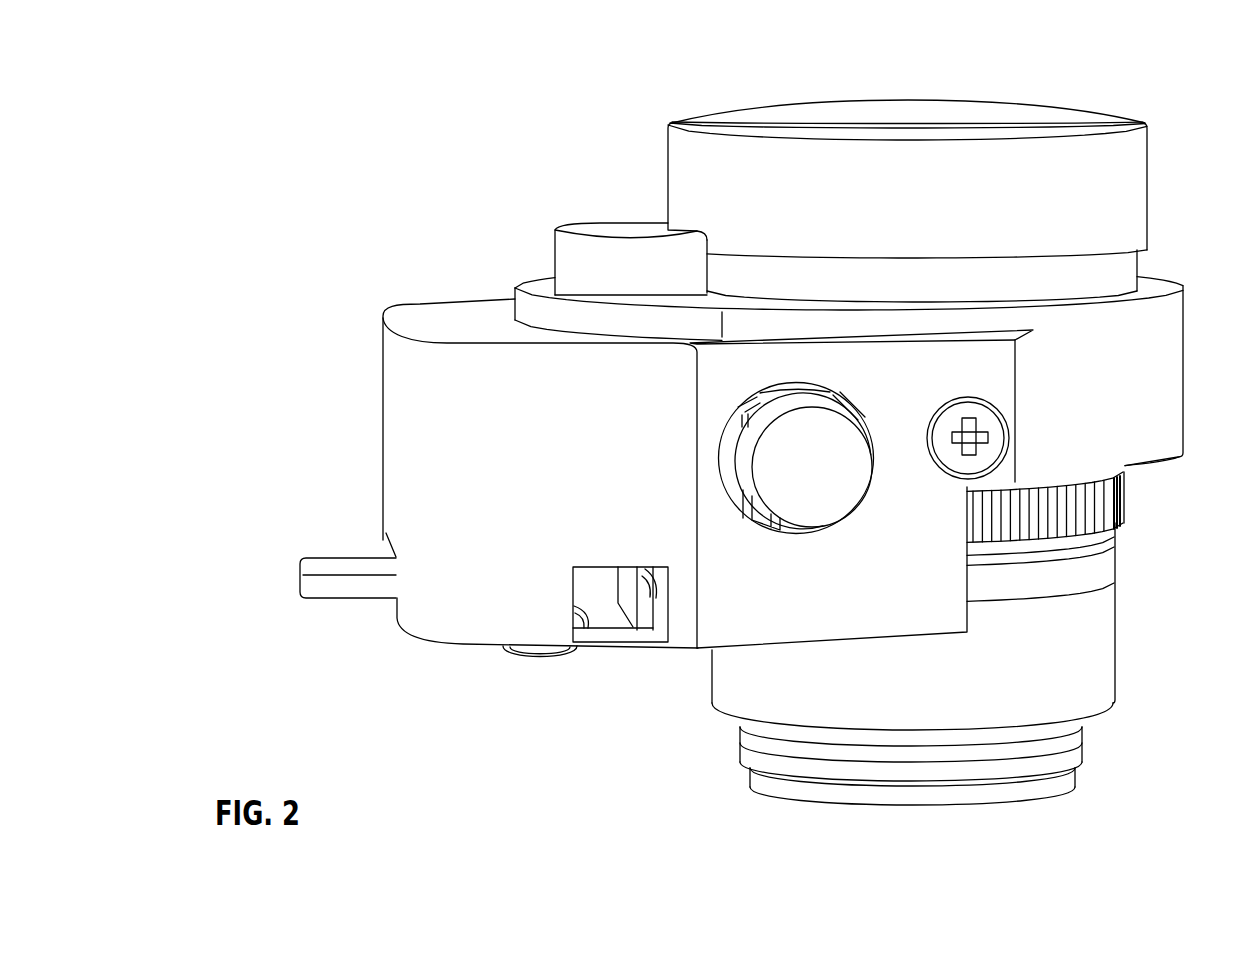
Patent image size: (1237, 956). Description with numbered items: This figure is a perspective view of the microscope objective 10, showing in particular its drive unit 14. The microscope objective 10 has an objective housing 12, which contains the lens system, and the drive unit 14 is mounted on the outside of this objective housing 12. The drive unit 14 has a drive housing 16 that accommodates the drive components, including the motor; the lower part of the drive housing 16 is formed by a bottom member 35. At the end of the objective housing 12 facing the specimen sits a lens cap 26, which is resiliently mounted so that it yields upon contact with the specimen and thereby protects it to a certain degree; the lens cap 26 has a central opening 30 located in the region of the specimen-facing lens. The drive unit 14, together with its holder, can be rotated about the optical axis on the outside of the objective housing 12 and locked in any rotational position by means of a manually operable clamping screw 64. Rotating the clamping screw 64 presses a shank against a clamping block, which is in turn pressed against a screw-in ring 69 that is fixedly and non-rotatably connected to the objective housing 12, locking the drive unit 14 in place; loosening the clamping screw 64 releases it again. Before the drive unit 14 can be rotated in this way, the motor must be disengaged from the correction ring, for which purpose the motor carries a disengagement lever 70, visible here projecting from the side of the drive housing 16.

The microscope objective 10 is at (548, 103).
The objective housing 12 is at (1114, 650).
The drive unit 14 is at (449, 700).
The drive housing 16 is at (445, 316).
The lens cap 26 is at (1130, 123).
The central opening 30 is at (975, 97).
The bottom member 35 is at (606, 636).
The clamping screw 64 is at (835, 503).
The screw-in ring 69 is at (1124, 505).
The disengagement lever 70 is at (332, 590).